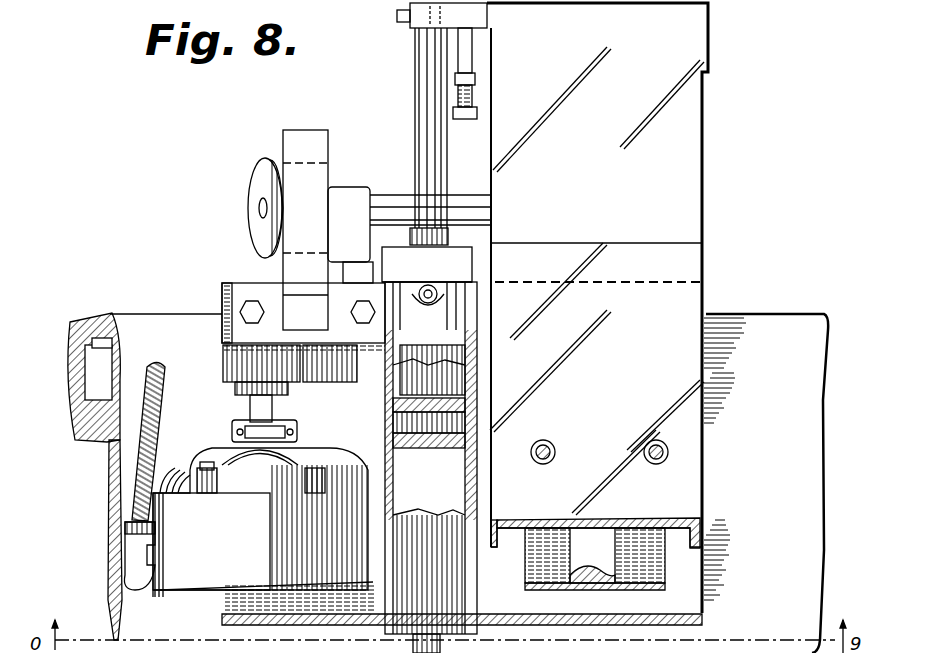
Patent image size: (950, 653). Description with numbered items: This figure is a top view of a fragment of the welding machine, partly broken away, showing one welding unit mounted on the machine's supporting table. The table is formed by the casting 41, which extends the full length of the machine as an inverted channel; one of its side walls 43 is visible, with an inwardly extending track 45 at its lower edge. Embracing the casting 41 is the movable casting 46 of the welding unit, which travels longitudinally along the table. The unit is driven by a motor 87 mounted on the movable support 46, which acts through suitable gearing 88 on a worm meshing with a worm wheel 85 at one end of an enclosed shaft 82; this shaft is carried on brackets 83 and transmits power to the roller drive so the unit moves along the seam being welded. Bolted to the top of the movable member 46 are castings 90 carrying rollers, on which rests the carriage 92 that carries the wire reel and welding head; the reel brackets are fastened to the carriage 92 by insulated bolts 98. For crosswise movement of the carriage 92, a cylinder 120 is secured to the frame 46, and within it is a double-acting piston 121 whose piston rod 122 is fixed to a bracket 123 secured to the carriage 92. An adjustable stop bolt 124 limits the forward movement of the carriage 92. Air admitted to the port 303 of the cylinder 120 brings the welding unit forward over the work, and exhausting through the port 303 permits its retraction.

The casting 41 is at (172, 322).
The side wall 43 is at (100, 327).
The track 45 is at (80, 375).
The casting 46 is at (688, 590).
The enclosed shaft 82 is at (388, 205).
The brackets 83 is at (345, 190).
The worm wheel 85 is at (262, 178).
The motor 87 is at (264, 530).
The gearing 88 is at (240, 358).
The castings 90 is at (575, 585).
The carriage 92 is at (700, 175).
The bolts 98 is at (646, 447).
The cylinder 120 is at (445, 485).
The double-acting piston 121 is at (430, 427).
The piston rod 122 is at (427, 157).
The bracket 123 is at (478, 20).
The adjustable stop bolt 124 is at (472, 96).
The port 303 is at (434, 290).